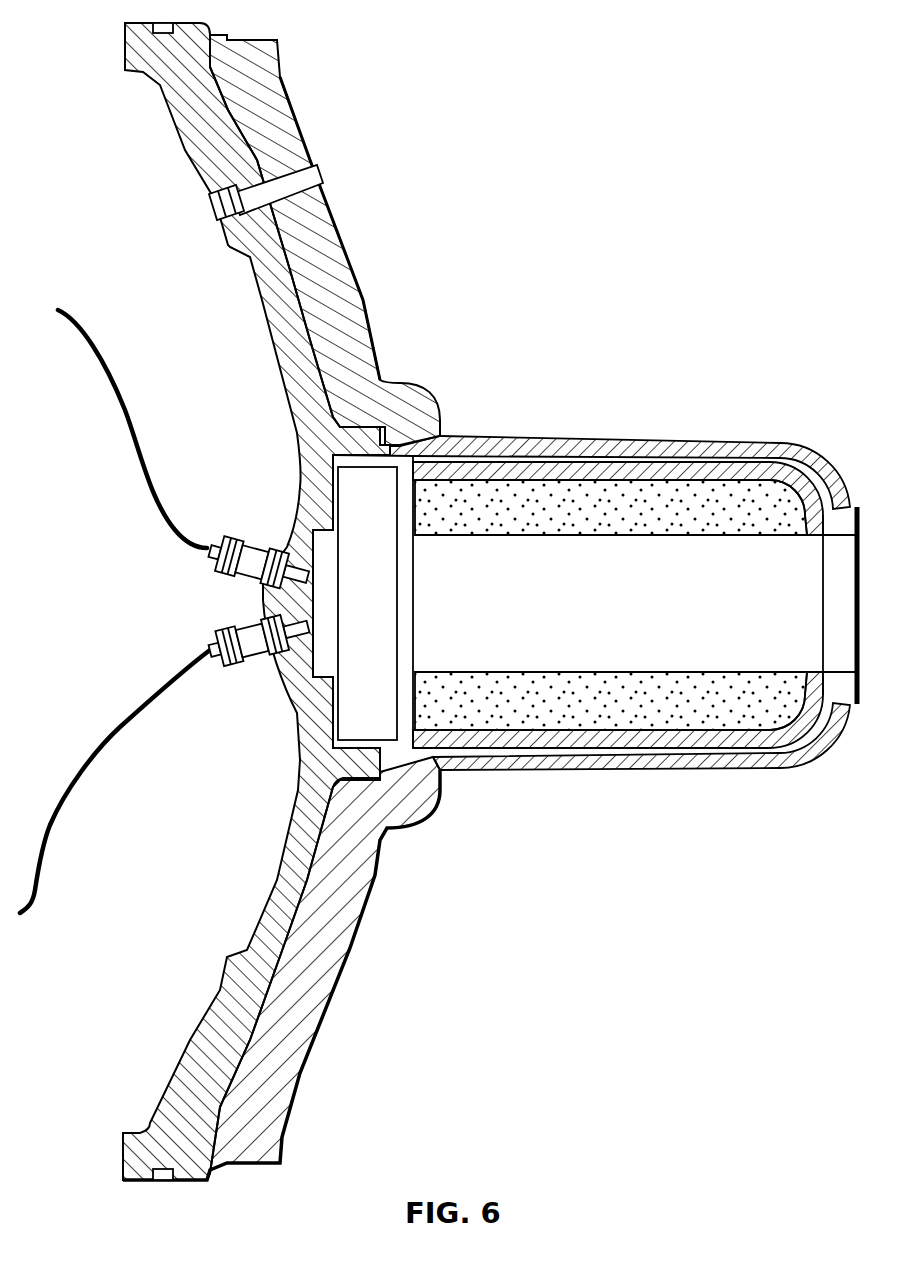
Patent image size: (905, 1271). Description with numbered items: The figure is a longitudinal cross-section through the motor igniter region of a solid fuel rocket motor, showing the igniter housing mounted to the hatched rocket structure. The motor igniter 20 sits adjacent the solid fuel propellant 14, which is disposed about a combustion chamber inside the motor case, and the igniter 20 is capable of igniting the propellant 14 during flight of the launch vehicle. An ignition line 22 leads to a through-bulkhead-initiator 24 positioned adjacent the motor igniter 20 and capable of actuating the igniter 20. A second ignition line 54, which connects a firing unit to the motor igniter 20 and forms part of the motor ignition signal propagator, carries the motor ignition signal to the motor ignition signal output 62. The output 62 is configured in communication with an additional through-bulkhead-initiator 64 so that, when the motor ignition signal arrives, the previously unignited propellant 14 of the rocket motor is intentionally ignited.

The solid fuel propellant 14 is at (523, 497).
The motor igniter 20 is at (477, 437).
The ignition line 22 is at (123, 403).
The through-bulkhead-initiator 24 is at (250, 557).
The ignition line 54 is at (121, 723).
The motor ignition signal output 62 is at (233, 669).
The through-bulkhead-initiator 64 is at (250, 657).